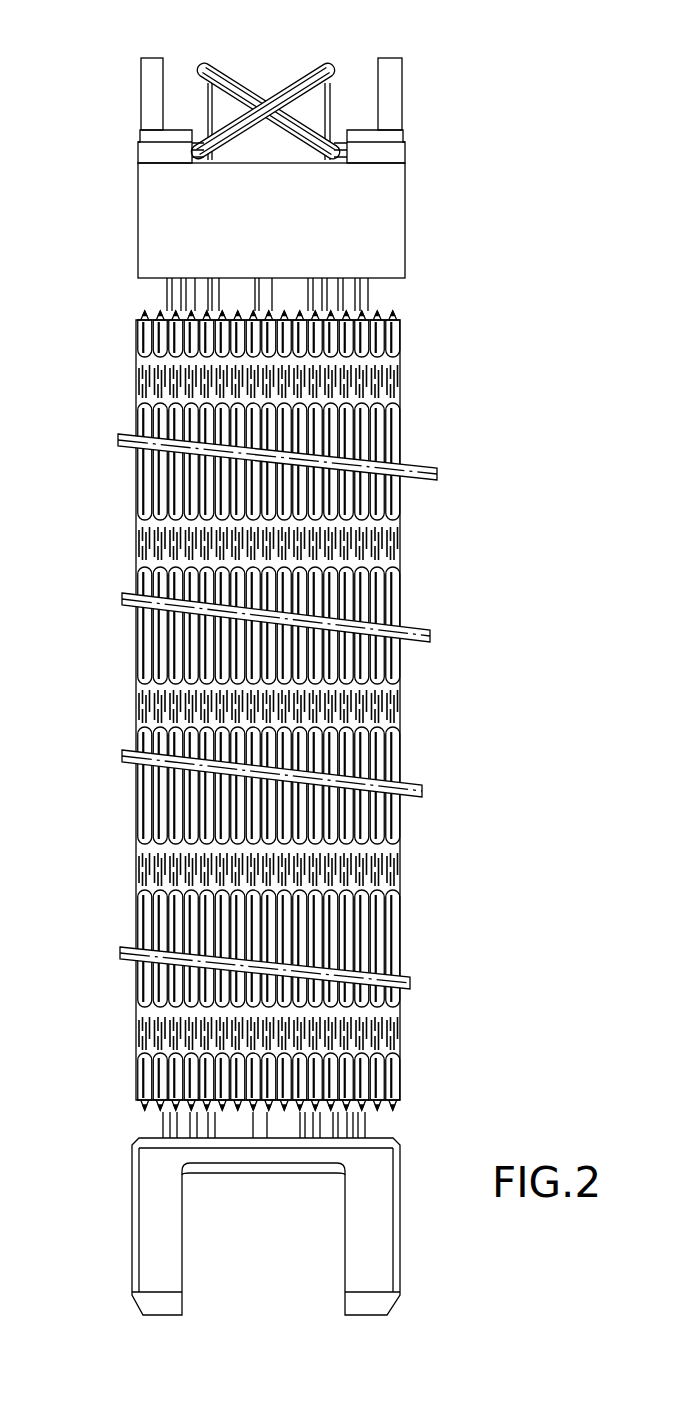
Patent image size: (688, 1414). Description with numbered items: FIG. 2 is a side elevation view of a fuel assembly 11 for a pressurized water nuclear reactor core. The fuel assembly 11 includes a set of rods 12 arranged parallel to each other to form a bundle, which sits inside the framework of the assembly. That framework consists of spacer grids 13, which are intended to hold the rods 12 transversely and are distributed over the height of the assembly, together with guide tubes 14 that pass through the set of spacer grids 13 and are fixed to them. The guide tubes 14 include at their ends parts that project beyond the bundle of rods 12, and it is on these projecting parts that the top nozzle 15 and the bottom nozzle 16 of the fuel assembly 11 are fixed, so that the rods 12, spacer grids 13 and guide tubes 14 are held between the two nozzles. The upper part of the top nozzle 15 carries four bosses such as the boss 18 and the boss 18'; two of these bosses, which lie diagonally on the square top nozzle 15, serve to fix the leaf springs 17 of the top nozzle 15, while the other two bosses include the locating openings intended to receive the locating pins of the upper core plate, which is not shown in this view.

The fuel assembly 11 is at (128, 624).
The rods 12 is at (192, 340).
The spacer grids 13 is at (377, 380).
The guide tubes 14 is at (363, 293).
The top nozzle 15 is at (167, 215).
The bottom nozzle 16 is at (162, 1203).
The leaf springs 17 is at (200, 68).
The boss 18 is at (405, 151).
The boss 18' is at (136, 146).